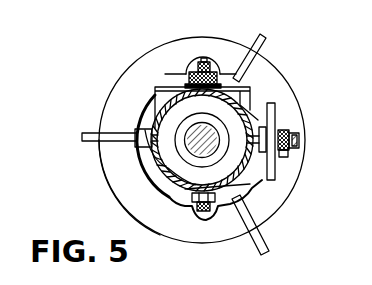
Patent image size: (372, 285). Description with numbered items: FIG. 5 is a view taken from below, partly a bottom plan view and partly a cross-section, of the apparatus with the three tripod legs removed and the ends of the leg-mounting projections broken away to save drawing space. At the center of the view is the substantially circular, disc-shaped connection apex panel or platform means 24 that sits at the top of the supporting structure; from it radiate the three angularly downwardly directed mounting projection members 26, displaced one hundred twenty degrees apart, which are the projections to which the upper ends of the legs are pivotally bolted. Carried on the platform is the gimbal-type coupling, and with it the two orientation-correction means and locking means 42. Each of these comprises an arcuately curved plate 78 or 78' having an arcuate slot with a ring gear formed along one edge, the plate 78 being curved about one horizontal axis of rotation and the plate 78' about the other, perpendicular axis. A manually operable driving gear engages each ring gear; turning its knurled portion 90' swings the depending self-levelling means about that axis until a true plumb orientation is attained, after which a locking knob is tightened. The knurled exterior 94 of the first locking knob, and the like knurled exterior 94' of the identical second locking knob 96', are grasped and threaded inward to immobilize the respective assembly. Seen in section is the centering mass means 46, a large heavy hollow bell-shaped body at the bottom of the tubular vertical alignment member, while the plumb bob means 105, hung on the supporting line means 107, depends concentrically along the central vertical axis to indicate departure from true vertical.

The connection apex panel or platform means 24 is at (291, 83).
The mounting projection members 26 is at (95, 133).
The orientation-correction means and locking means 42 is at (183, 68).
The centering mass means 46 is at (169, 205).
The plate 78 is at (223, 132).
The plate 78' is at (293, 135).
The knurled portion 90' is at (309, 164).
The knurled exterior 94 is at (200, 44).
The nut 94' is at (310, 131).
The locking knob 96' is at (316, 140).
The plumb bob means 105 is at (123, 204).
The supporting line means 107 is at (355, 284).